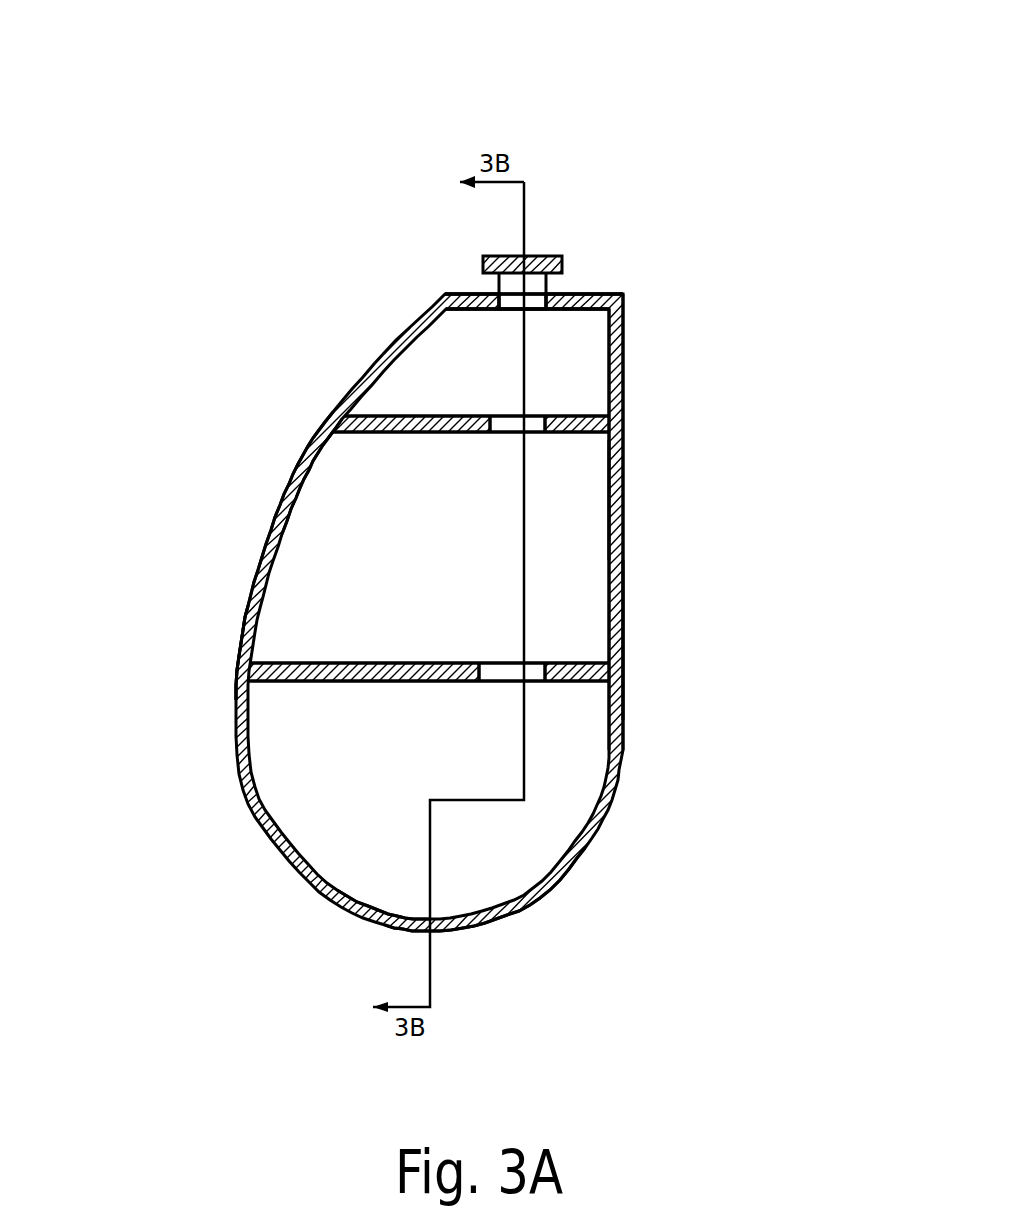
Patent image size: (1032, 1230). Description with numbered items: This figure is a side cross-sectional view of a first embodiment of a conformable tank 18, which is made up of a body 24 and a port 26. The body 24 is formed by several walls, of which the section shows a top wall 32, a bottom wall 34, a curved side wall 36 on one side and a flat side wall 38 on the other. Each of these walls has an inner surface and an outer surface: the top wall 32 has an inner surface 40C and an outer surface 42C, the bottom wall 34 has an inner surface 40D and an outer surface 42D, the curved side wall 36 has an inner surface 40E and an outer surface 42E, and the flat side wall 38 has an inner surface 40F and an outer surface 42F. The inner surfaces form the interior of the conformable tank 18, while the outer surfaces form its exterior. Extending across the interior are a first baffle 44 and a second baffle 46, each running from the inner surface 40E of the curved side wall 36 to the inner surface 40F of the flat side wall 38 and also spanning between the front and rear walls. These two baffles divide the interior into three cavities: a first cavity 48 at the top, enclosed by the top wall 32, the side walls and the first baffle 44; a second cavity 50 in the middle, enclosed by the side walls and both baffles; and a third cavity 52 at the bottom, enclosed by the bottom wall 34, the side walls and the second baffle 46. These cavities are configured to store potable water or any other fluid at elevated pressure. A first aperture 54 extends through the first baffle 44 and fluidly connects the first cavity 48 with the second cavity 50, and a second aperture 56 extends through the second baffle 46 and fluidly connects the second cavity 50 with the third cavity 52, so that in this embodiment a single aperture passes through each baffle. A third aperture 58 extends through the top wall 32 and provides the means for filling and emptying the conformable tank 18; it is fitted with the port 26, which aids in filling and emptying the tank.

The conformable tank 18 is at (812, 120).
The body 24 is at (370, 318).
The port 26 is at (542, 256).
The top wall 32 is at (462, 293).
The bottom wall 34 is at (467, 930).
The curved side wall 36 is at (287, 480).
The flat side wall 38 is at (613, 575).
The inner surface 40C is at (583, 311).
The inner surface 40D is at (377, 898).
The inner surface 40E is at (290, 511).
The inner surface 40F is at (605, 482).
The outer surface 42C is at (567, 288).
The outer surface 42D is at (545, 897).
The outer surface 42E is at (243, 609).
The outer surface 42F is at (627, 632).
The first baffle 44 is at (587, 425).
The second baffle 46 is at (585, 682).
The first cavity 48 is at (453, 338).
The second cavity 50 is at (367, 557).
The third cavity 52 is at (327, 780).
The first aperture 54 is at (532, 423).
The second aperture 56 is at (545, 683).
The third aperture 58 is at (515, 305).